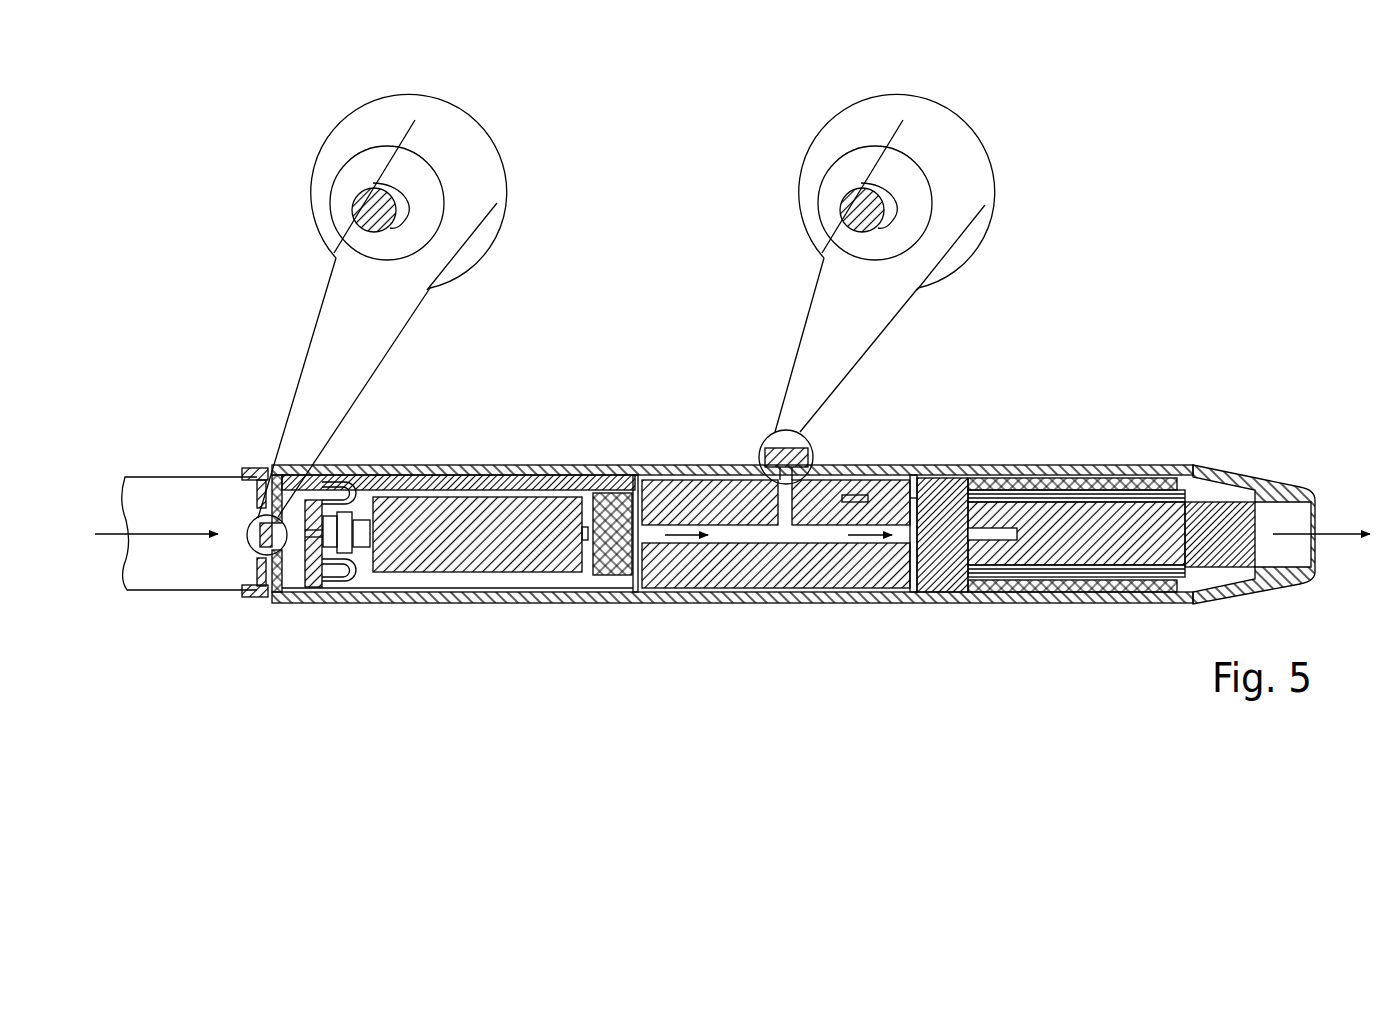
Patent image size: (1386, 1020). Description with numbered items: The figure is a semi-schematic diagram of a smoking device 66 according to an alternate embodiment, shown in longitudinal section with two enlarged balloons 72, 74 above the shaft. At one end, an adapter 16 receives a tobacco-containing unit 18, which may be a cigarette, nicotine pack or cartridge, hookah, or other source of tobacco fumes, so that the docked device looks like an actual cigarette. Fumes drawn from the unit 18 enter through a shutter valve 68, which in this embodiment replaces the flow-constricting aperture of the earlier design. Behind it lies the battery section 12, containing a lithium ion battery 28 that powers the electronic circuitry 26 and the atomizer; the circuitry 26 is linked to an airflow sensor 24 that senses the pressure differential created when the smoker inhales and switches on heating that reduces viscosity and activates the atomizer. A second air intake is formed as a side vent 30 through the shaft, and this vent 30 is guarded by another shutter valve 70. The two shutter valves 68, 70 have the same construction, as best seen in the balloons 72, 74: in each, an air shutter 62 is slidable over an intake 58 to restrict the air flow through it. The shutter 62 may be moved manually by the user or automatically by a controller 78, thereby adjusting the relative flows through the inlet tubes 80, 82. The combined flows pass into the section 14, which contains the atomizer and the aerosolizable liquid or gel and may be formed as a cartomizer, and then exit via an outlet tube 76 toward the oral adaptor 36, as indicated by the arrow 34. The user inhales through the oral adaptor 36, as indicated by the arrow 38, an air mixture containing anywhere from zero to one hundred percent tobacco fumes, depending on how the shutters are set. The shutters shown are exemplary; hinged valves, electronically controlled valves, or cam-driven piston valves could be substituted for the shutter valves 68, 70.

The battery section 12 is at (487, 590).
The section containing an atomizer and aerosolizable liquid 14 is at (1095, 478).
The adapter 16 is at (256, 468).
The tobacco-containing unit 18 is at (156, 591).
The airflow sensor 24 is at (370, 470).
The electronic circuitry 26 is at (367, 603).
The lithium ion battery 28 is at (470, 508).
The side vent 30 is at (758, 465).
The arrow (air exiting toward the oral adaptor) 34 is at (867, 537).
The oral adaptor 36 is at (1310, 520).
The arrow (inhalation through oral adaptor) 38 is at (1340, 575).
The intake 58 is at (412, 198).
The air shutter 62 is at (330, 215).
The smoking device 66 is at (251, 381).
The shutter valve 68 is at (378, 183).
The shutter valve 70 is at (866, 183).
The balloon 72 is at (986, 186).
The balloon 74 is at (508, 186).
The outlet tube 76 is at (820, 543).
The controller 78 is at (855, 495).
The inlet tube 80 is at (680, 545).
The inlet tube 82 is at (777, 508).